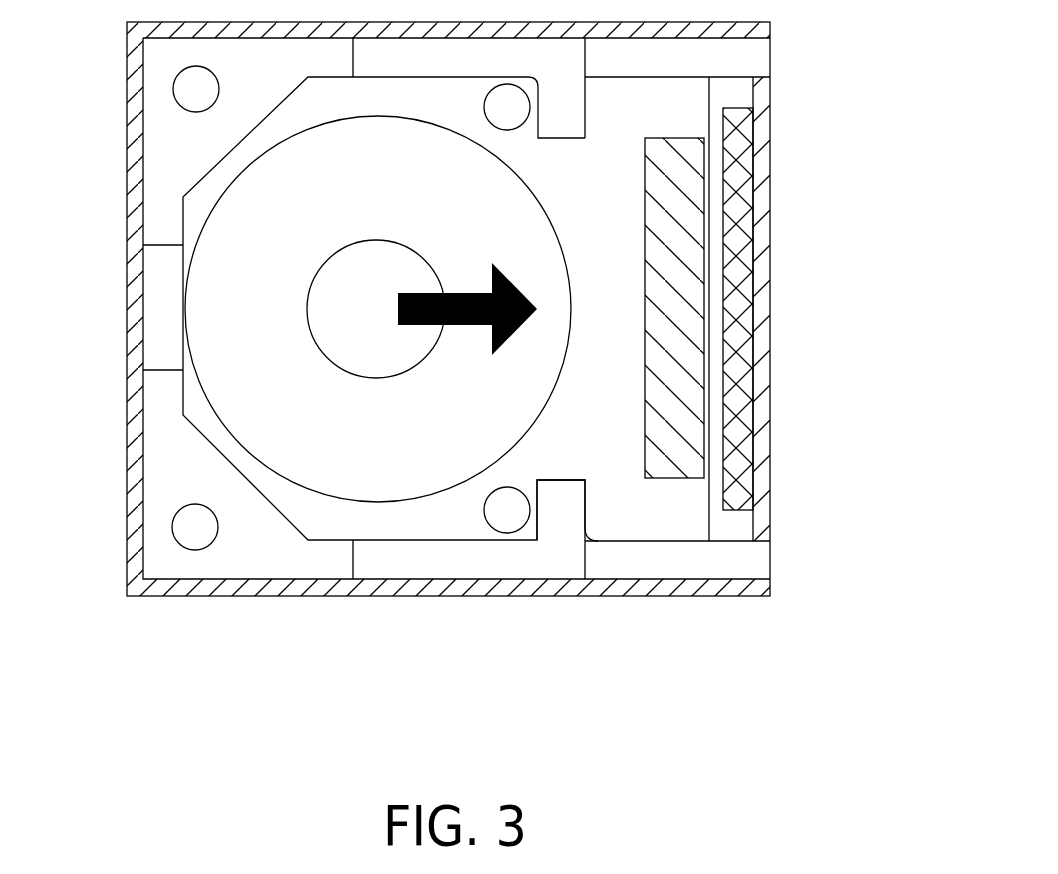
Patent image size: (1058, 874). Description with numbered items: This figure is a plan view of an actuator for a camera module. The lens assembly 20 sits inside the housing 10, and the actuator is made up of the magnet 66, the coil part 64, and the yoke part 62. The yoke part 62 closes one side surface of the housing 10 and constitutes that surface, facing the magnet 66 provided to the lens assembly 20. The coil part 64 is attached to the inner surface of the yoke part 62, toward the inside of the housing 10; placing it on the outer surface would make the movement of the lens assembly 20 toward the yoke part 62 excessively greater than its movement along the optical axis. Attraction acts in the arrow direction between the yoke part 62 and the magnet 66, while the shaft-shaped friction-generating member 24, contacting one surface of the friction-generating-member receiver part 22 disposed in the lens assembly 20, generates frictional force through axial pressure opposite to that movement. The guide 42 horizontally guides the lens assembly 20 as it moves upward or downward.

The housing 10 is at (132, 314).
The lens assembly 20 is at (412, 532).
The friction-generating-member receiver part 22 is at (522, 533).
The friction-generating member 24 is at (503, 517).
The guide 42 is at (240, 562).
The yoke part 62 is at (760, 358).
The coil part 64 is at (749, 278).
The magnet 66 is at (703, 201).